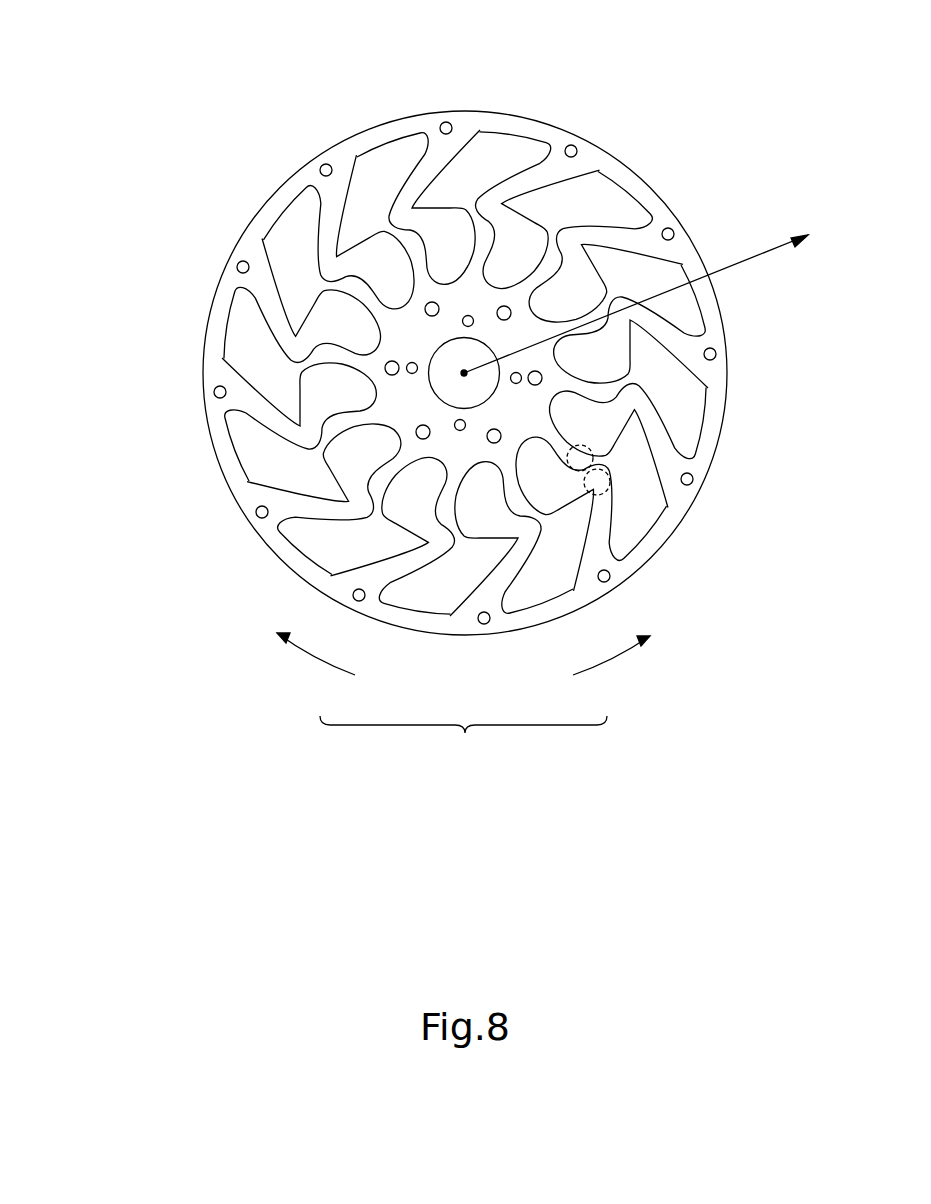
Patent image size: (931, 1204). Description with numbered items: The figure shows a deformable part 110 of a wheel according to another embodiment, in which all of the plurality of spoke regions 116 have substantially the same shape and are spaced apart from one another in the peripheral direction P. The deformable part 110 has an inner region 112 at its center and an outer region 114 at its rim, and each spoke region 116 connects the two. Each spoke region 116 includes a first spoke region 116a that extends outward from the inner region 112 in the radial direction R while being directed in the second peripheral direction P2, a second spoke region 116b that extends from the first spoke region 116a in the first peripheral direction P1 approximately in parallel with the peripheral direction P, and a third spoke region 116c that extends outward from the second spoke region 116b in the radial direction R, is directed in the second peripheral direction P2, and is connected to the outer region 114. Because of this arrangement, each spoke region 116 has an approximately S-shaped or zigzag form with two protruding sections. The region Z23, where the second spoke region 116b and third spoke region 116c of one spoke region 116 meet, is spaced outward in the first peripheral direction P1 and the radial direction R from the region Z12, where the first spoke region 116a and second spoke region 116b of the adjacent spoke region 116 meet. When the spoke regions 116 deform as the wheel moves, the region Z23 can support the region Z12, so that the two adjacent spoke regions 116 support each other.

The deformable part 110 is at (395, 333).
The inner region 112 is at (463, 290).
The outer region 114 is at (531, 131).
The spoke regions 116 is at (395, 373).
The first spoke region 116a is at (352, 358).
The second spoke region 116b is at (308, 397).
The third spoke region 116c is at (275, 428).
The region in which the first spoke region and the second spoke region meet Z12 is at (594, 452).
The region in which the second spoke region and the third spoke region meet Z23 is at (611, 478).
The radial direction R is at (768, 247).
The peripheral direction P is at (463, 736).
The first peripheral direction P1 is at (607, 660).
The second peripheral direction P2 is at (318, 660).